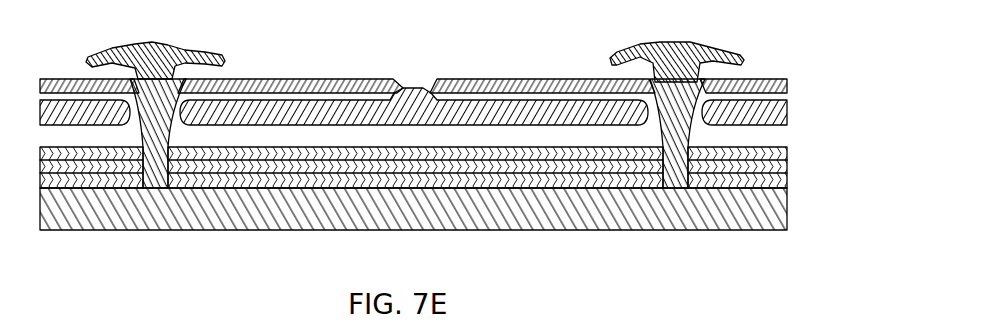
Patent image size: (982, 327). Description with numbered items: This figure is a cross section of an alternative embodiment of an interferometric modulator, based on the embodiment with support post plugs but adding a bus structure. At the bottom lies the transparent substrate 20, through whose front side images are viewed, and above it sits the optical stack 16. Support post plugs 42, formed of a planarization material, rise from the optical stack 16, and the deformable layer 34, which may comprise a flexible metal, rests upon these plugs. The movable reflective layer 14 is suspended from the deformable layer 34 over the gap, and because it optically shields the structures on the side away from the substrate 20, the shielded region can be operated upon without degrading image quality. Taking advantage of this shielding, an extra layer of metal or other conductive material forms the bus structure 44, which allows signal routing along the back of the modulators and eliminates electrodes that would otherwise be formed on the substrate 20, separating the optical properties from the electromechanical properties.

The movable reflective layer 14 is at (355, 108).
The optical stack 16 is at (792, 147).
The substrate 20 is at (530, 222).
The deformable layer 34 is at (460, 82).
The support post plugs 42 is at (655, 115).
The bus structure 44 is at (130, 45).